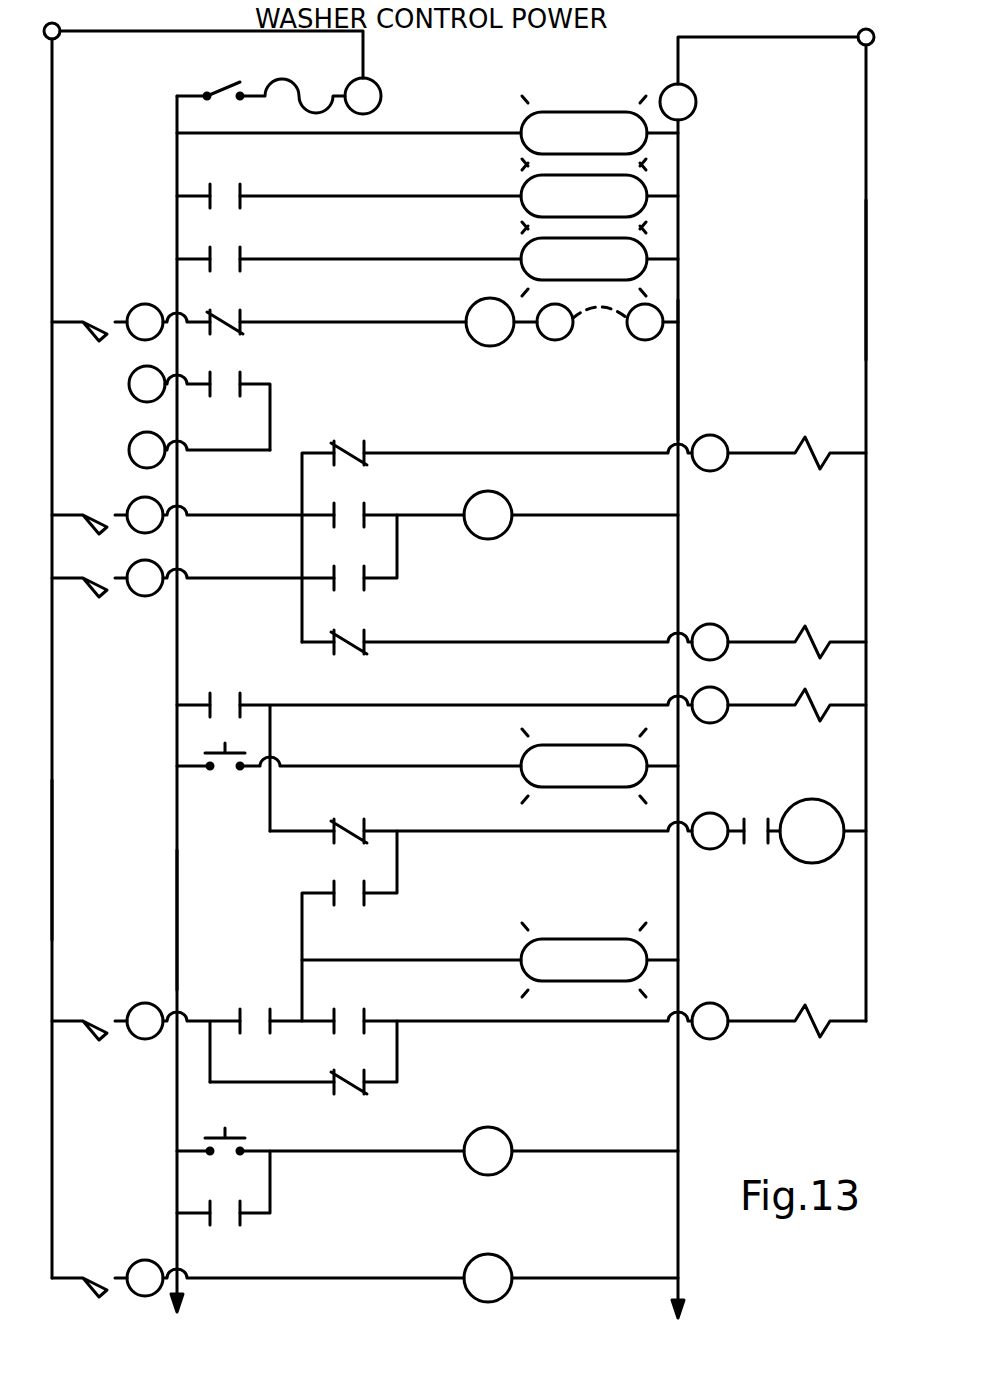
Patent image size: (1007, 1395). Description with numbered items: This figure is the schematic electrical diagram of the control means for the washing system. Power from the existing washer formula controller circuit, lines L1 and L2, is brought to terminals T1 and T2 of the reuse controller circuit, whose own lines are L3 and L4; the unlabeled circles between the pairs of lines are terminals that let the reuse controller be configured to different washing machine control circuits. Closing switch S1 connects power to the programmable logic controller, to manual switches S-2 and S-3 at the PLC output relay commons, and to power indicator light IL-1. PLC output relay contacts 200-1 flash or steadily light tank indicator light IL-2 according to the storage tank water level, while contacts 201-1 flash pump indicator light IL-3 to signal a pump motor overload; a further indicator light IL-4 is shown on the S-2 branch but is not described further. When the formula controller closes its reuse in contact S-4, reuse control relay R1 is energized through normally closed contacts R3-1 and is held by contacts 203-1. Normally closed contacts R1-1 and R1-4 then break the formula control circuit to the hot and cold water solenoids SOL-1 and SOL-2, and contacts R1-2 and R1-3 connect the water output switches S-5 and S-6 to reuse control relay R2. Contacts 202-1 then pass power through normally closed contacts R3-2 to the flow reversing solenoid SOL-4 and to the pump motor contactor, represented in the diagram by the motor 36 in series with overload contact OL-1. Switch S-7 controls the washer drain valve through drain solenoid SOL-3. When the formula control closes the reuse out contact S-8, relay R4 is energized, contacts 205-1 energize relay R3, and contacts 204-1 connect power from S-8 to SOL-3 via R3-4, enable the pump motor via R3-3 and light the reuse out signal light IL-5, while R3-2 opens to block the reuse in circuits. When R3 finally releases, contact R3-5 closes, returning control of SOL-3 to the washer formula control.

The switch S1 is at (221, 90).
The terminal T1 is at (380, 92).
The terminal T2 is at (664, 100).
The power indicator light IL-1 is at (584, 133).
The tank indicator light IL-2 is at (584, 196).
The pump indicator light IL-3 is at (584, 259).
The indicator lamp IL-4 is at (584, 766).
The reuse out signal light IL-5 is at (584, 960).
The normally open contacts 200-1 is at (226, 178).
The normally open contacts 201-1 is at (229, 241).
The normally open contacts 202-1 is at (241, 686).
The contacts 203-1 is at (229, 369).
The normally open contacts 204-1 is at (260, 1002).
The contacts 205-1 is at (233, 1198).
The reuse control relay R1 is at (572, 322).
The normally closed contacts R1-1 is at (358, 435).
The contacts R1-2 is at (361, 501).
The contacts R1-3 is at (361, 563).
The normally closed contacts R1-4 is at (360, 626).
The reuse control relay R2 is at (571, 515).
The relay R3 is at (571, 1151).
The normally closed contacts R3-1 is at (227, 306).
The normally closed contacts R3-2 is at (357, 816).
The contacts R3-3 is at (355, 879).
The contacts R3-4 is at (357, 1002).
The normally closed contacts R3-5 is at (357, 1068).
The reuse control relay R4 is at (571, 1278).
The manual switch S-2 is at (226, 743).
The manual switch S-3 is at (225, 1126).
The reuse in output switch S-4 is at (107, 311).
The washer control output switch S-5 is at (107, 506).
The washer control output switch S-6 is at (107, 571).
The washer formula control switch S-7 is at (107, 1010).
The reuse out switch S-8 is at (107, 1267).
The washer hot water solenoid SOL-1 is at (779, 443).
The washer cold water solenoid SOL-2 is at (779, 633).
The drain solenoid valve SOL-3 is at (779, 1010).
The reuse flow reversing solenoid valve SOL-4 is at (779, 696).
The overload contact OL-1 is at (748, 811).
The motor 36 is at (820, 864).
The line L1 is at (866, 280).
The power line L2 is at (52, 862).
The line L3 is at (680, 372).
The line L4 is at (177, 920).